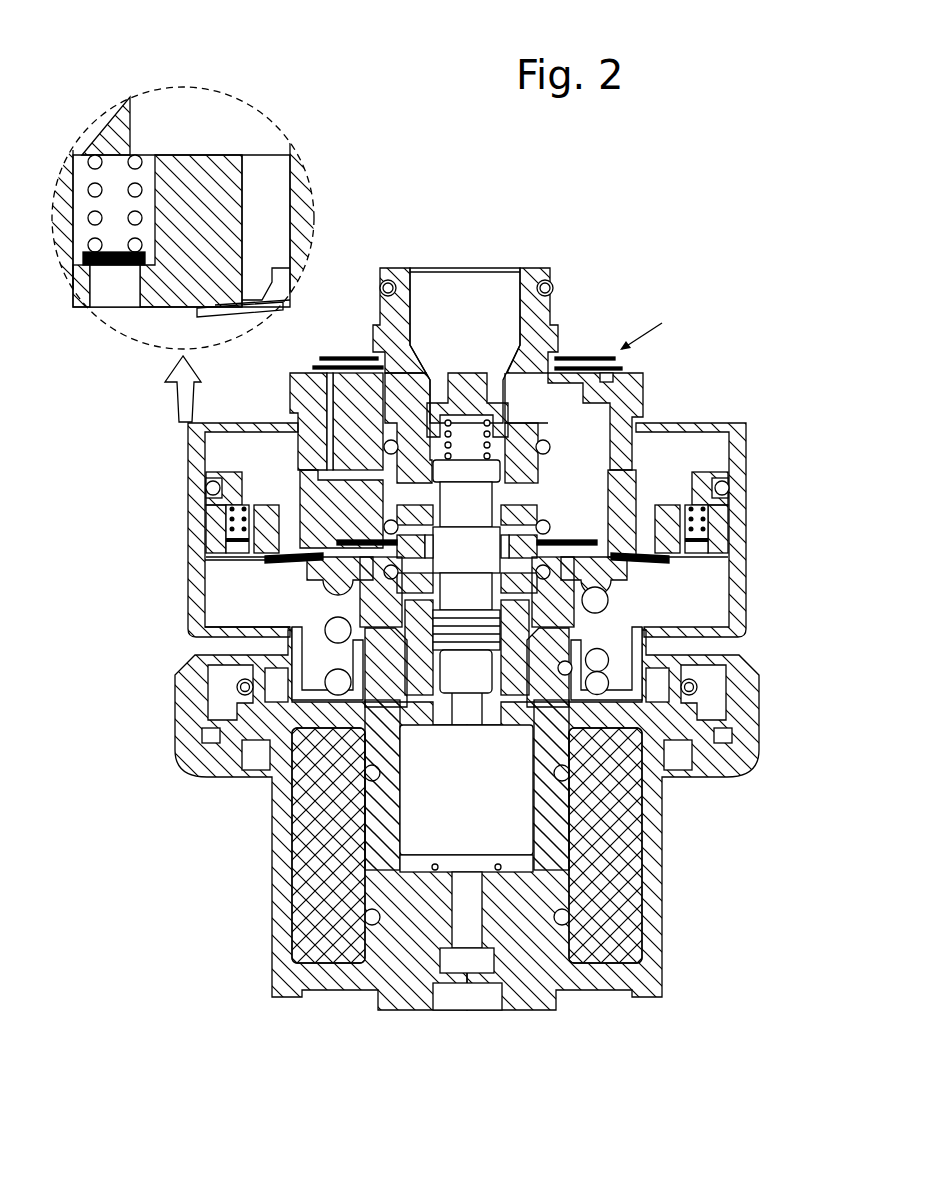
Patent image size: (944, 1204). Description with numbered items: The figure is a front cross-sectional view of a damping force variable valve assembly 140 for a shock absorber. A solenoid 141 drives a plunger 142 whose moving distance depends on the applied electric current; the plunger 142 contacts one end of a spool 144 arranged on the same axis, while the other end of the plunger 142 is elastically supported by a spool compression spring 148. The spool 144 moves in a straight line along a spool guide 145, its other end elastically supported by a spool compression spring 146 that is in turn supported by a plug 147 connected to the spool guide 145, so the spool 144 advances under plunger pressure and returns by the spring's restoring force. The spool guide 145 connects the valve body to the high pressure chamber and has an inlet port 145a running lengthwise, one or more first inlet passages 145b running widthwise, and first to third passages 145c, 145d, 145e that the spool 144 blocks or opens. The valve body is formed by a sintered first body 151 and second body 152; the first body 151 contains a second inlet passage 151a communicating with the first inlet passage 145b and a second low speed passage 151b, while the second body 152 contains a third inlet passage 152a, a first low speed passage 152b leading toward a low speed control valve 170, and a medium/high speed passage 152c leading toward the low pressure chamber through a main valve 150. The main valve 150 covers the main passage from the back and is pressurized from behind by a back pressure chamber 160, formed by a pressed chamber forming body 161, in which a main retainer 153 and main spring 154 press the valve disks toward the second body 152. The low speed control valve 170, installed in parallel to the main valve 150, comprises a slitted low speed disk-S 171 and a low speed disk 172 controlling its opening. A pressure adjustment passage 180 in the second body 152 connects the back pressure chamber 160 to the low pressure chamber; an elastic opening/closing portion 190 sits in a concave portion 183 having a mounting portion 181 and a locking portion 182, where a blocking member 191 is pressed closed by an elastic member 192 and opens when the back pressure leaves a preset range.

The damping force variable valve assembly 140 is at (366, 236).
The solenoid 141 is at (308, 933).
The plunger 142 is at (425, 795).
The spool 144 is at (330, 530).
The spool guide 145 is at (560, 314).
The inlet port 145a is at (412, 298).
The first inlet passage 145b is at (508, 388).
The first passage 145c is at (548, 483).
The second passage 145d is at (600, 600).
The third passage 145e is at (600, 657).
The spool compression spring 146 is at (560, 437).
The plug 147 is at (467, 385).
The spool compression spring 148 is at (437, 868).
The main valve 150 is at (640, 566).
The first body 151 is at (300, 402).
The second inlet passage 151a is at (600, 420).
The second low speed passage 151b is at (333, 405).
The second body 152 is at (290, 500).
The third inlet passage 152a is at (640, 520).
The first low speed passage 152b is at (330, 455).
The medium/high speed passage 152c is at (265, 548).
The main retainer 153 is at (285, 553).
The main spring 154 is at (330, 630).
The back pressure chamber 160 is at (266, 597).
The chamber forming body 161 is at (713, 562).
The low speed control valve 170 is at (664, 327).
The low speed disk-S 171 is at (617, 367).
The low speed disk 172 is at (597, 357).
The pressure adjustment passage 180 is at (118, 285).
The mounting portion 181 is at (148, 245).
The locking portion 182 is at (110, 152).
The concave portion 183 is at (85, 170).
The elastic opening/closing portion 190 is at (92, 388).
The blocking member 191 is at (105, 268).
The elastic member 192 is at (88, 220).